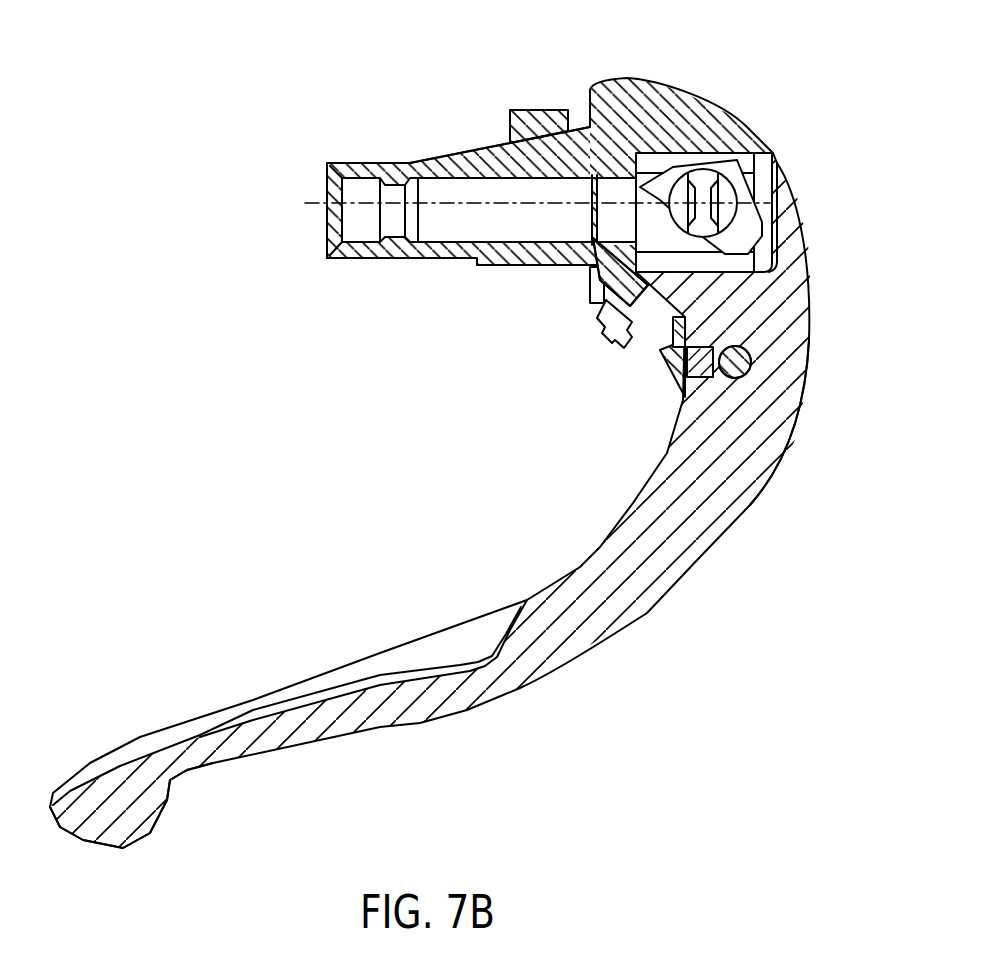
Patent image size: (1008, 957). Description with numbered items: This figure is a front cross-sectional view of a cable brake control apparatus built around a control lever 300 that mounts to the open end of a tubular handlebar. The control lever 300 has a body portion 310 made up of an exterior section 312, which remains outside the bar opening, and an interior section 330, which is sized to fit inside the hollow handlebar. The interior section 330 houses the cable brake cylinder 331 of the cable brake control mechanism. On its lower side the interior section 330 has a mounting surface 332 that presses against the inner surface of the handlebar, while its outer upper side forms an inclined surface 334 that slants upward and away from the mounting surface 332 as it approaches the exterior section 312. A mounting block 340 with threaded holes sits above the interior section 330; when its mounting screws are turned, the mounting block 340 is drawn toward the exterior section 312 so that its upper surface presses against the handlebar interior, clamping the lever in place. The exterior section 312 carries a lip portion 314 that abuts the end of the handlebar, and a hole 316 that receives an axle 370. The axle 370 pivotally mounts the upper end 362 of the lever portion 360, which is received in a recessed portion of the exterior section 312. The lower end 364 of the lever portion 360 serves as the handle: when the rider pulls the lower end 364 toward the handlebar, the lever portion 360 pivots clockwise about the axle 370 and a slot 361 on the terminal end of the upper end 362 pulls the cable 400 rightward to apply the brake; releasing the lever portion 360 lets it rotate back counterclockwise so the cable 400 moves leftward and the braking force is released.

The control lever 300 is at (454, 384).
The body portion 310 is at (578, 351).
The exterior section 312 is at (698, 80).
The lip portion 314 is at (587, 277).
The hole 316 is at (743, 205).
The interior section 330 is at (435, 283).
The cable brake cylinder 331 is at (348, 262).
The mounting surface 332 is at (507, 268).
The inclined surface 334 is at (447, 160).
The mounting block 340 is at (540, 110).
The lever portion 360 is at (409, 621).
The slot 361 is at (742, 160).
The upper end 362 is at (808, 282).
The lower end 364 is at (243, 760).
The axle 370 is at (752, 364).
The cable 400 is at (318, 204).